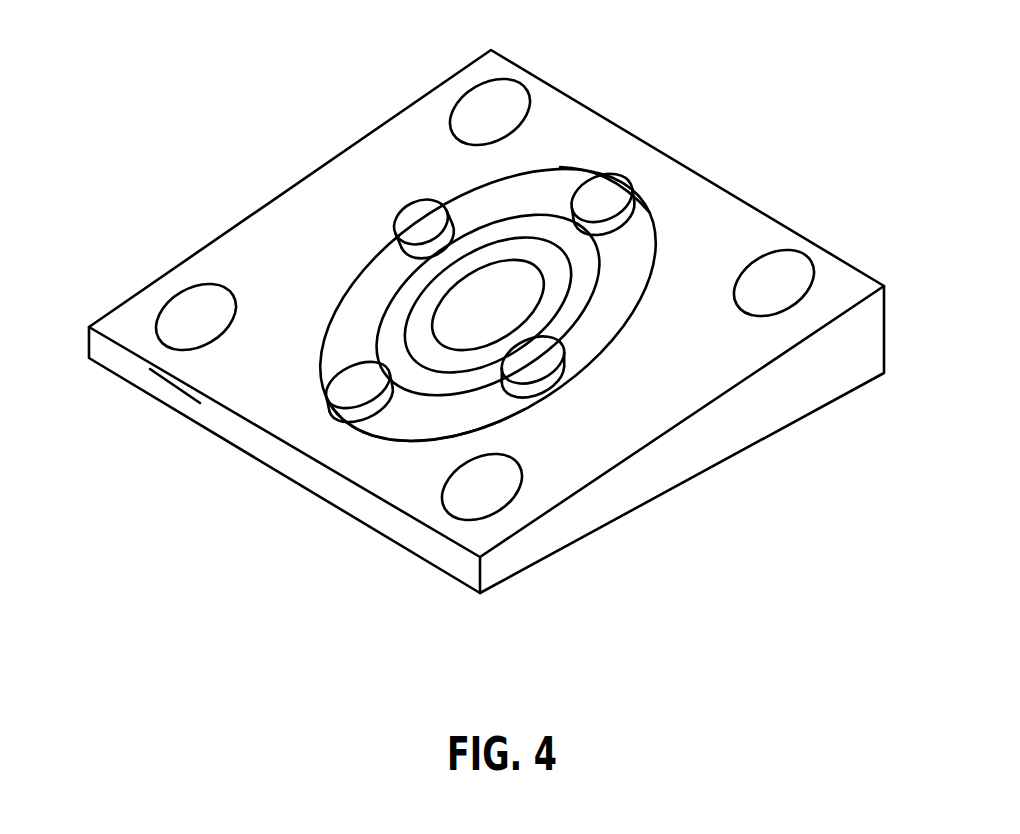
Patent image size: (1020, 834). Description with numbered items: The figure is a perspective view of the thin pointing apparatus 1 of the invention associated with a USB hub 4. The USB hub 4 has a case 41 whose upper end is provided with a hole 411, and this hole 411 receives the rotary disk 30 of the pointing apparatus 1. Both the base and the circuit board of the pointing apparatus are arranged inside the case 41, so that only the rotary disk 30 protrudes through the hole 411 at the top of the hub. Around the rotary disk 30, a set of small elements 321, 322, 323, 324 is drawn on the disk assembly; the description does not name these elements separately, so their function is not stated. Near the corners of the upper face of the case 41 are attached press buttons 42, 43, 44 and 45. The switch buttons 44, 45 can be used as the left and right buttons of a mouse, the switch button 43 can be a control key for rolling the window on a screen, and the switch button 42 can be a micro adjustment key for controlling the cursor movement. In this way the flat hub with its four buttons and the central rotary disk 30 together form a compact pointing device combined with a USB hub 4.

The flange assembly 1 is at (575, 163).
The USB hub 4 is at (278, 472).
The case 41 is at (247, 387).
The hole 411 is at (430, 440).
The press button 42 is at (773, 275).
The press button 43 is at (500, 108).
The press button 44 is at (180, 330).
The switch button 45 is at (470, 500).
The rotary disk 30 is at (638, 240).
The positioning tab 321 is at (343, 393).
The positioning tab 322 is at (530, 367).
The positioning tab 323 is at (597, 200).
The positioning tab 324 is at (417, 215).